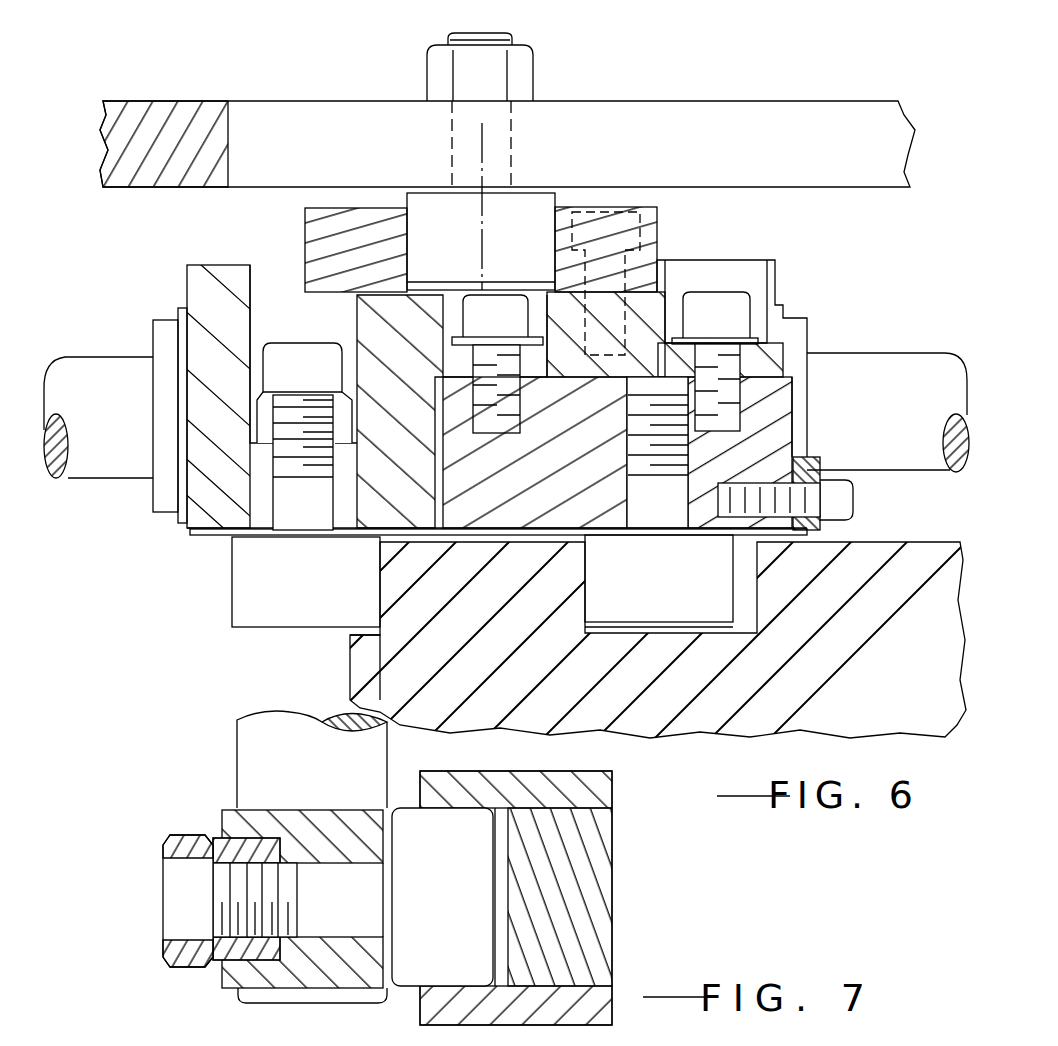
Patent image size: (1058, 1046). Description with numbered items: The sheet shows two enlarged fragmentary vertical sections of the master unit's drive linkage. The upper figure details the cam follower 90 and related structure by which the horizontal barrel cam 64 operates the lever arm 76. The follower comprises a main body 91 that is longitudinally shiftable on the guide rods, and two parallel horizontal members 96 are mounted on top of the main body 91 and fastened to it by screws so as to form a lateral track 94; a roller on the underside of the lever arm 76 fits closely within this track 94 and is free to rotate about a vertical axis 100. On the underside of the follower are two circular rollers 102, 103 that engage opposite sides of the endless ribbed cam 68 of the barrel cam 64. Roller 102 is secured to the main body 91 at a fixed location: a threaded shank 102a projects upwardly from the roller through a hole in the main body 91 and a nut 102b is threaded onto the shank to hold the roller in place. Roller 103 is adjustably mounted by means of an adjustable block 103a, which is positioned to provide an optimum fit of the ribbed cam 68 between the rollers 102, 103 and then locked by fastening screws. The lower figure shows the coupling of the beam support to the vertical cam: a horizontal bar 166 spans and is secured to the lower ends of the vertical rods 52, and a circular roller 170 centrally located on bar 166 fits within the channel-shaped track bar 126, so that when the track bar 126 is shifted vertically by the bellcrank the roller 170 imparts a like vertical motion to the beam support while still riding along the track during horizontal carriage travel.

In FIG. 6, the lever arm 76 is at (290, 101).
In FIG. 6, the lateral track 94 is at (407, 245).
In FIG. 6, the parallel horizontal members 96 is at (304, 250).
In FIG. 6, the vertical axis 100 is at (482, 250).
In FIG. 6, the cam follower 90 is at (506, 411).
In FIG. 6, the main body 91 is at (206, 531).
In FIG. 6, the circular roller 102 is at (232, 463).
In FIG. 6, the shank 102a is at (287, 450).
In FIG. 6, the nut 102b is at (337, 312).
In FIG. 6, the circular roller 103 is at (659, 581).
In FIG. 6, the adjustable block 103a is at (777, 417).
In FIG. 6, the barrel cam 64 is at (594, 635).
In FIG. 6, the ribbed cam 68 is at (430, 645).
In FIG. 7, the vertical rods 52 is at (280, 765).
In FIG. 7, the track bar 126 is at (616, 893).
In FIG. 7, the circular roller 170 is at (442, 897).
In FIG. 7, the horizontal bar 166 is at (247, 972).